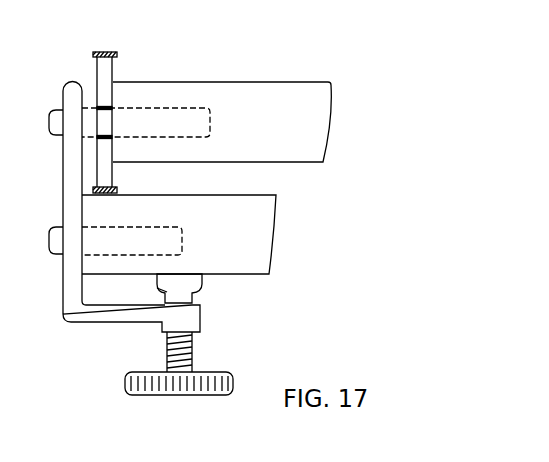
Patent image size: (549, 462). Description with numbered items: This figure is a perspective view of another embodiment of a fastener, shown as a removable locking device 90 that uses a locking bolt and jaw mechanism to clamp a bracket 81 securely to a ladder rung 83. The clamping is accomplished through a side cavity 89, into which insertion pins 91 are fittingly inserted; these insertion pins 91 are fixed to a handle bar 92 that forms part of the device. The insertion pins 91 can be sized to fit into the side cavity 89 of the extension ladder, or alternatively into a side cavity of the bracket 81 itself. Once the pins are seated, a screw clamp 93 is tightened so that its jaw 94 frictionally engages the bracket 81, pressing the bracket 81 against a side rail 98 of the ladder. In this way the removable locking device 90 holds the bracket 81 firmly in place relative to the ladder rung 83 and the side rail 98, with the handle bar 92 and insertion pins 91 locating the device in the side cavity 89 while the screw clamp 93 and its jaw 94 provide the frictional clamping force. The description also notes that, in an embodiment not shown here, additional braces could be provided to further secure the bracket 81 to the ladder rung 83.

The bracket 81 is at (276, 215).
The ladder rung 83 is at (275, 82).
The side cavity 89 is at (105, 118).
The removable locking device 90 is at (58, 82).
The insertion pins 91 is at (212, 120).
The handle bar 92 is at (72, 187).
The screw clamp 93 is at (193, 283).
The jaw 94 is at (193, 348).
The side rail 98 is at (110, 72).